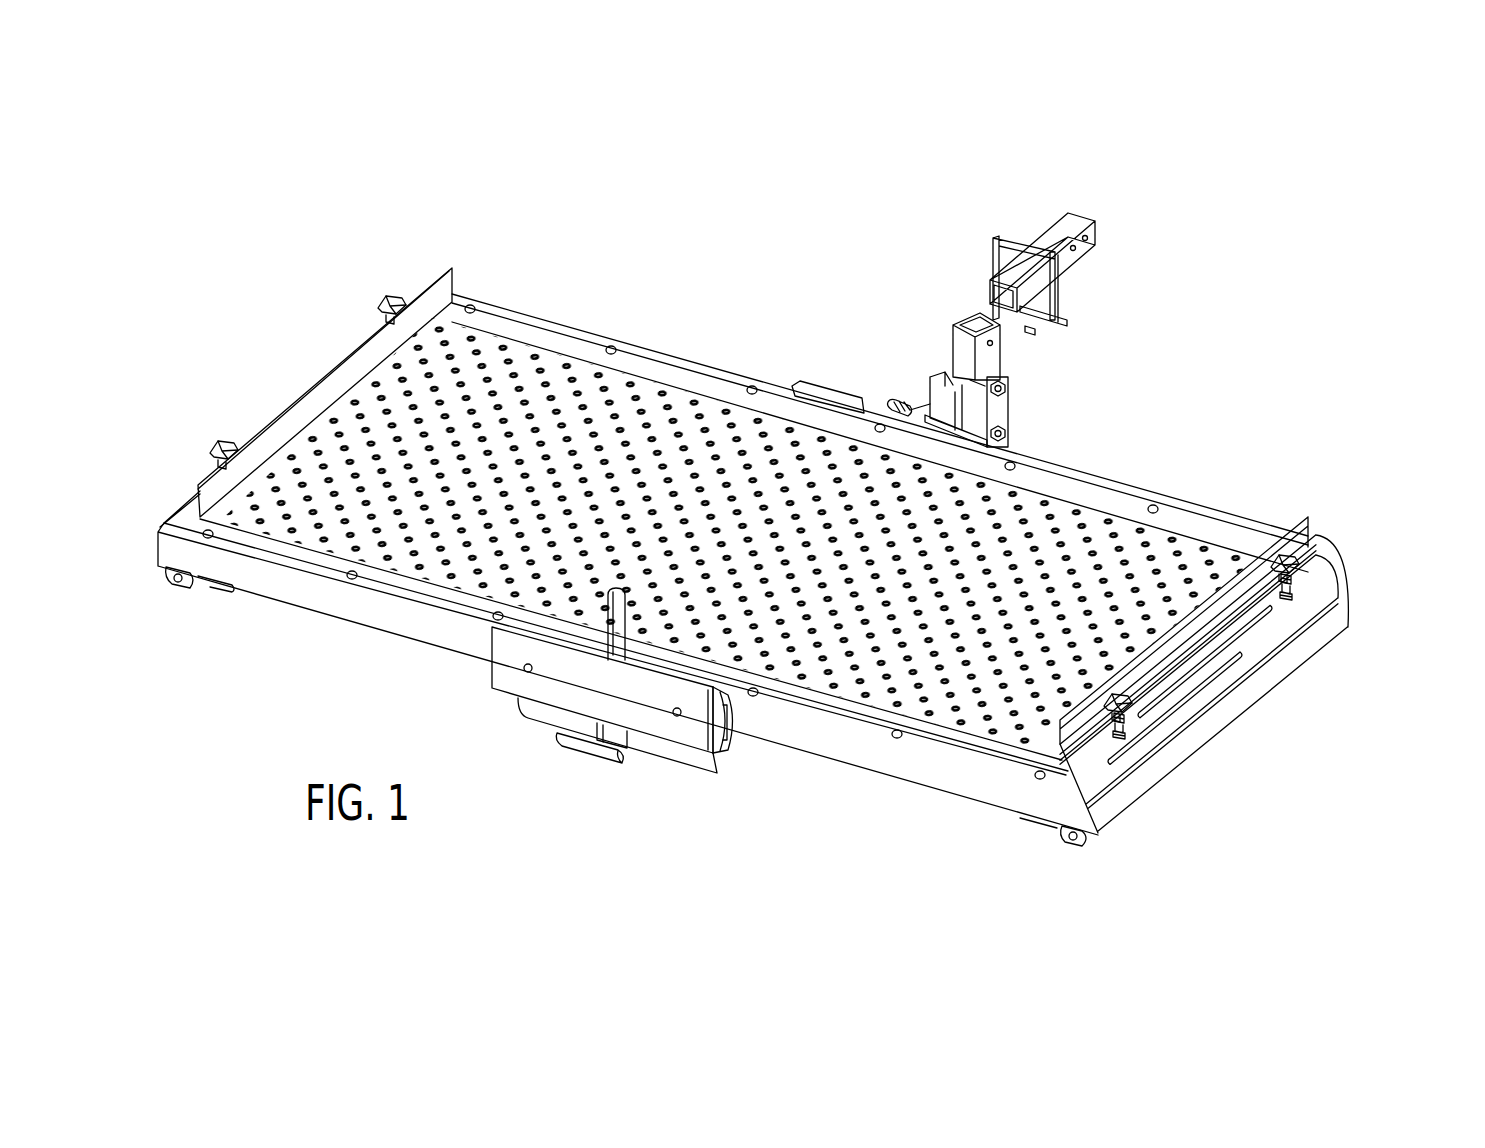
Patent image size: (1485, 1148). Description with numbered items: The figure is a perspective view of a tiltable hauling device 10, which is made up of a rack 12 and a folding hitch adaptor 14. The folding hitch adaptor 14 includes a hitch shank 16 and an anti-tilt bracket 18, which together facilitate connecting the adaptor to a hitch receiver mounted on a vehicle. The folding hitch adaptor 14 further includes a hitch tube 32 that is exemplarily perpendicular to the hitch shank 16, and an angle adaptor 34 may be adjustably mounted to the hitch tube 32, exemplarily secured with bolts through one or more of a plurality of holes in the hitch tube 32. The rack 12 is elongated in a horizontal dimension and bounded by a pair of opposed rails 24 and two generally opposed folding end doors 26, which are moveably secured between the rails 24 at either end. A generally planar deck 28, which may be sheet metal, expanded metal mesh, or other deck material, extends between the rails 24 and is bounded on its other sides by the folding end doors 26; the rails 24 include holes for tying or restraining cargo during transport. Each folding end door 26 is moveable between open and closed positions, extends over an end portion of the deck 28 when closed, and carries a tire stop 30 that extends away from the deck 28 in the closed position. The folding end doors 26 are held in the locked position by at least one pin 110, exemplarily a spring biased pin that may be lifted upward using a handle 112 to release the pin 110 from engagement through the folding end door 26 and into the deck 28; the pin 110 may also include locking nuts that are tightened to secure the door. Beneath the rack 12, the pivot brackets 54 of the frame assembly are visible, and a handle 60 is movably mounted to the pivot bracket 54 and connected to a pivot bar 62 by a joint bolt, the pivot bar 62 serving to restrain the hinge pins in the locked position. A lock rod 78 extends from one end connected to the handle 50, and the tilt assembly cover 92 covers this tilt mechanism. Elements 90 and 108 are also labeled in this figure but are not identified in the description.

The tiltable hauling device 10 is at (594, 182).
The rack 12 is at (1214, 492).
The folding hitch adaptor 14 is at (1037, 359).
The hitch shank 16 is at (1073, 222).
The anti-tilt bracket 18 is at (1012, 248).
The rails 24 is at (683, 372).
The folding end doors 26 is at (427, 259).
The deck 28 is at (550, 420).
The tire stop 30 is at (338, 388).
The hitch tube 32 is at (967, 360).
The angle adaptor 34 is at (975, 425).
The handle 50 is at (600, 748).
The pivot brackets 54 is at (808, 393).
The handle 60 is at (615, 618).
The pivot bar 62 is at (730, 750).
The lock rod 78 is at (637, 745).
The slot 90 is at (742, 714).
The tilt assembly cover 92 is at (697, 732).
The mounting lug 108 is at (195, 603).
The pin 110 is at (383, 323).
The handle 112 is at (390, 300).